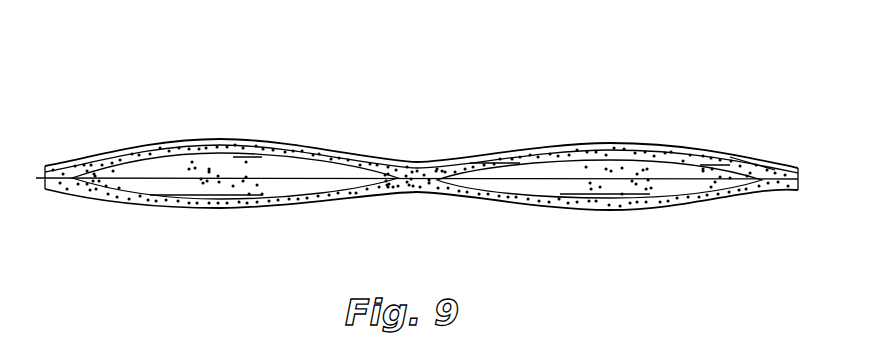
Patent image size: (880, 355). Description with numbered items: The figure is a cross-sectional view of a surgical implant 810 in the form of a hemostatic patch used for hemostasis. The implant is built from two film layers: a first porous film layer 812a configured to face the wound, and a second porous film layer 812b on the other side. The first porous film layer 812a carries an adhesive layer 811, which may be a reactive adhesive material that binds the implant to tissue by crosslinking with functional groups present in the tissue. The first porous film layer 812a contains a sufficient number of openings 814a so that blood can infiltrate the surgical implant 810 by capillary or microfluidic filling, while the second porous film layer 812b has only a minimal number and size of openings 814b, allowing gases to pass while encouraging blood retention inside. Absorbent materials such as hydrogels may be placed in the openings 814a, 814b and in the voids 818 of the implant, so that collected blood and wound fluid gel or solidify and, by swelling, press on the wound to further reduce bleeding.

The surgical implant 810 is at (417, 153).
The adhesive layer 811 is at (657, 147).
The first porous film layer 812a is at (122, 155).
The second porous film layer 812b is at (123, 198).
The openings 814a is at (360, 160).
The openings 814b is at (603, 210).
The voids 818 is at (282, 168).